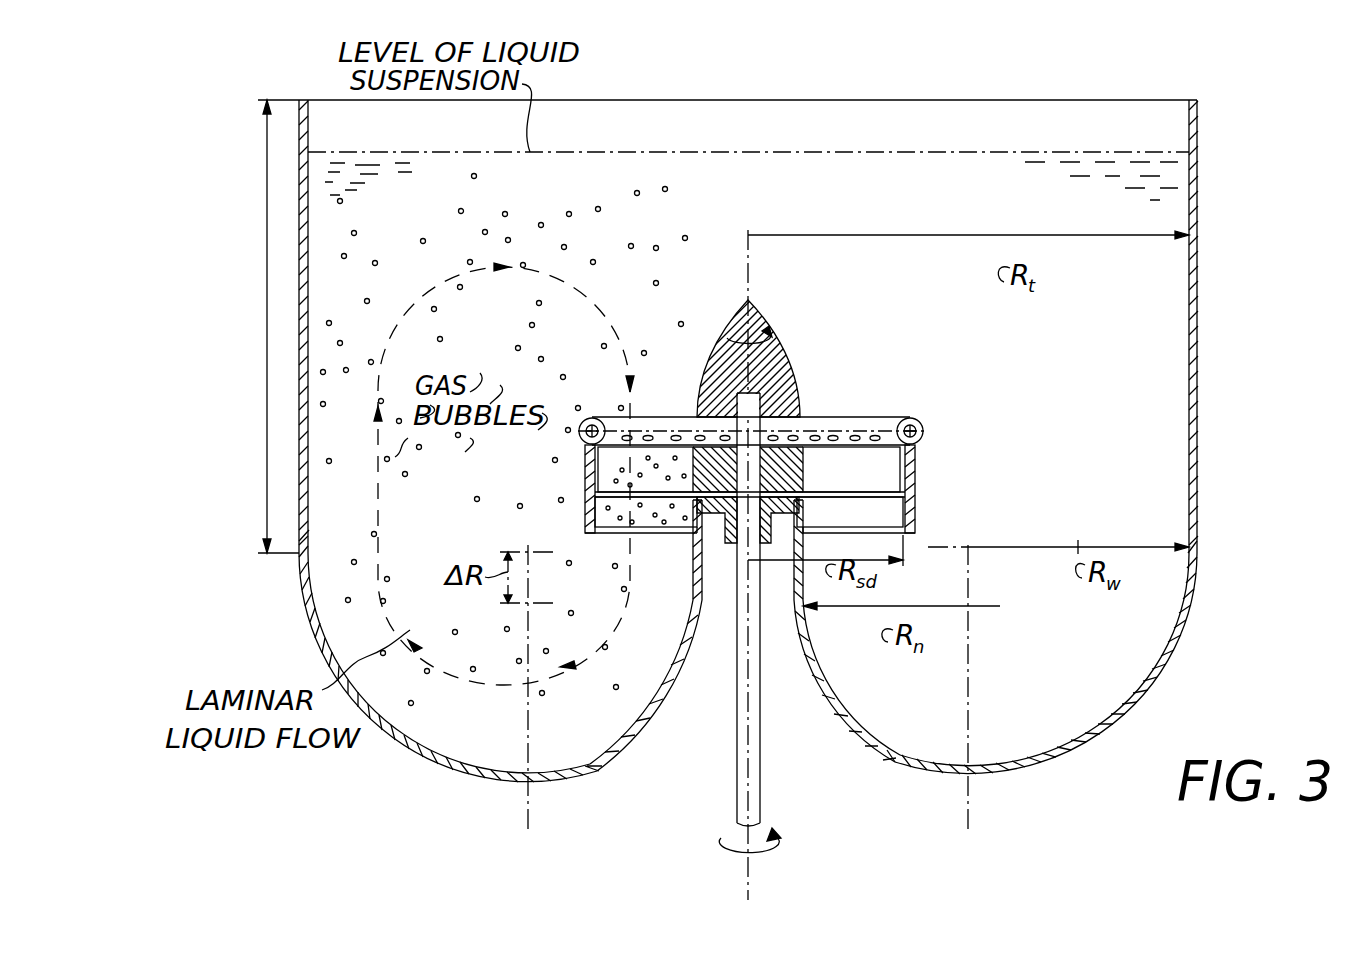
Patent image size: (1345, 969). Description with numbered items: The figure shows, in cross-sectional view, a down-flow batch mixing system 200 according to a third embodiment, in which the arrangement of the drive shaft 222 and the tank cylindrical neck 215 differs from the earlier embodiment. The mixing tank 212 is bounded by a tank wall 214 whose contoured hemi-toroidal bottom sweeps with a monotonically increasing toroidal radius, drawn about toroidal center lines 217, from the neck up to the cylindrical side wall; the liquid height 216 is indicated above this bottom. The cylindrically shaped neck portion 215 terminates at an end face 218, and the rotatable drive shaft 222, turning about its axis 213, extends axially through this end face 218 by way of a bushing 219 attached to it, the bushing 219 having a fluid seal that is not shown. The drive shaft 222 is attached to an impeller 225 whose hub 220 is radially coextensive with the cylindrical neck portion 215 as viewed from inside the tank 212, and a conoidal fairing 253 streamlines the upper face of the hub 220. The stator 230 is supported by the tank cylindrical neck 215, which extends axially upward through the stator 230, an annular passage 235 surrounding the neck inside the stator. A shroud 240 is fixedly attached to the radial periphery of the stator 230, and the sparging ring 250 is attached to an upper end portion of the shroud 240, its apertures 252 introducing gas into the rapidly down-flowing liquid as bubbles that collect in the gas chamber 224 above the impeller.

The down-flow batch mixing system 200 is at (338, 772).
The mixing tank 212 is at (1200, 453).
The axis of rotation of shaft 213 is at (748, 872).
The tank wall 214 is at (299, 588).
The cylindrical neck portion 215 is at (693, 584).
The liquid height 216 is at (267, 283).
The lobe center axis 217 is at (528, 798).
The end face 218 is at (803, 497).
The bushing 219 is at (730, 545).
The hub 220 is at (808, 464).
The drive shaft 222 is at (737, 787).
The gas chamber 224 is at (656, 447).
The impeller 225 is at (912, 466).
The stator 230 is at (903, 533).
The lower side chamber 235 is at (912, 504).
The shroud 240 is at (590, 480).
The sparging ring 250 is at (915, 420).
The sparger holes 252 is at (855, 435).
The conoidal fairing 253 is at (760, 330).